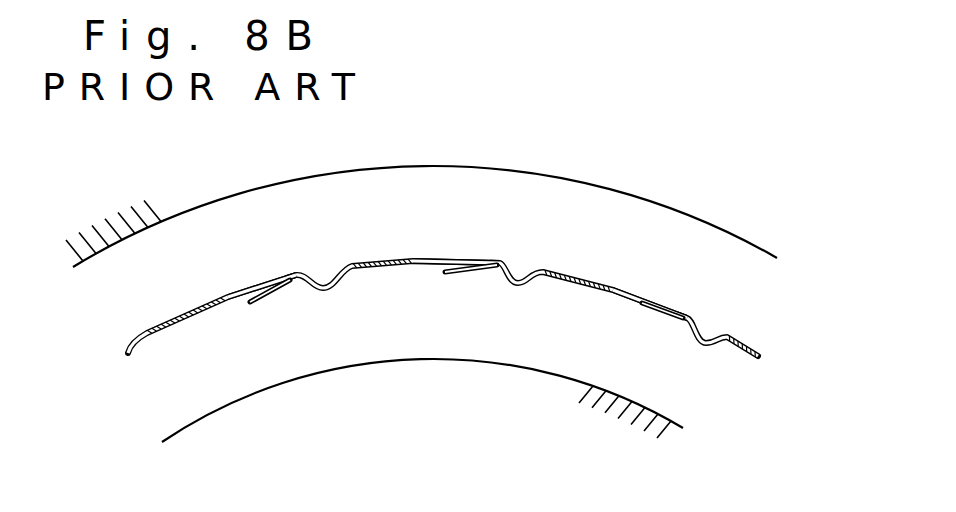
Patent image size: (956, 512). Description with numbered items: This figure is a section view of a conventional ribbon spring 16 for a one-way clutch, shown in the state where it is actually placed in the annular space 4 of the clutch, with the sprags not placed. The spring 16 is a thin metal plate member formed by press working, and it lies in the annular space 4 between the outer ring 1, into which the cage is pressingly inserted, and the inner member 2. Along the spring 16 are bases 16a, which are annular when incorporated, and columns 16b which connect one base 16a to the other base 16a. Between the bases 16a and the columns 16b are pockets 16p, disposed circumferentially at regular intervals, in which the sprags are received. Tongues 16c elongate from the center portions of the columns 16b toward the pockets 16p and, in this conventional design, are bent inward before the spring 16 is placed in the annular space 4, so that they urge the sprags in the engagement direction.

The outer ring 1 is at (156, 215).
The inner member (shaft) 2 is at (570, 392).
The annular space 4 is at (690, 235).
The spring 16 is at (396, 250).
The base 16a is at (232, 292).
The column 16b is at (370, 260).
The tongue 16c is at (260, 300).
The pocket 16p is at (258, 287).